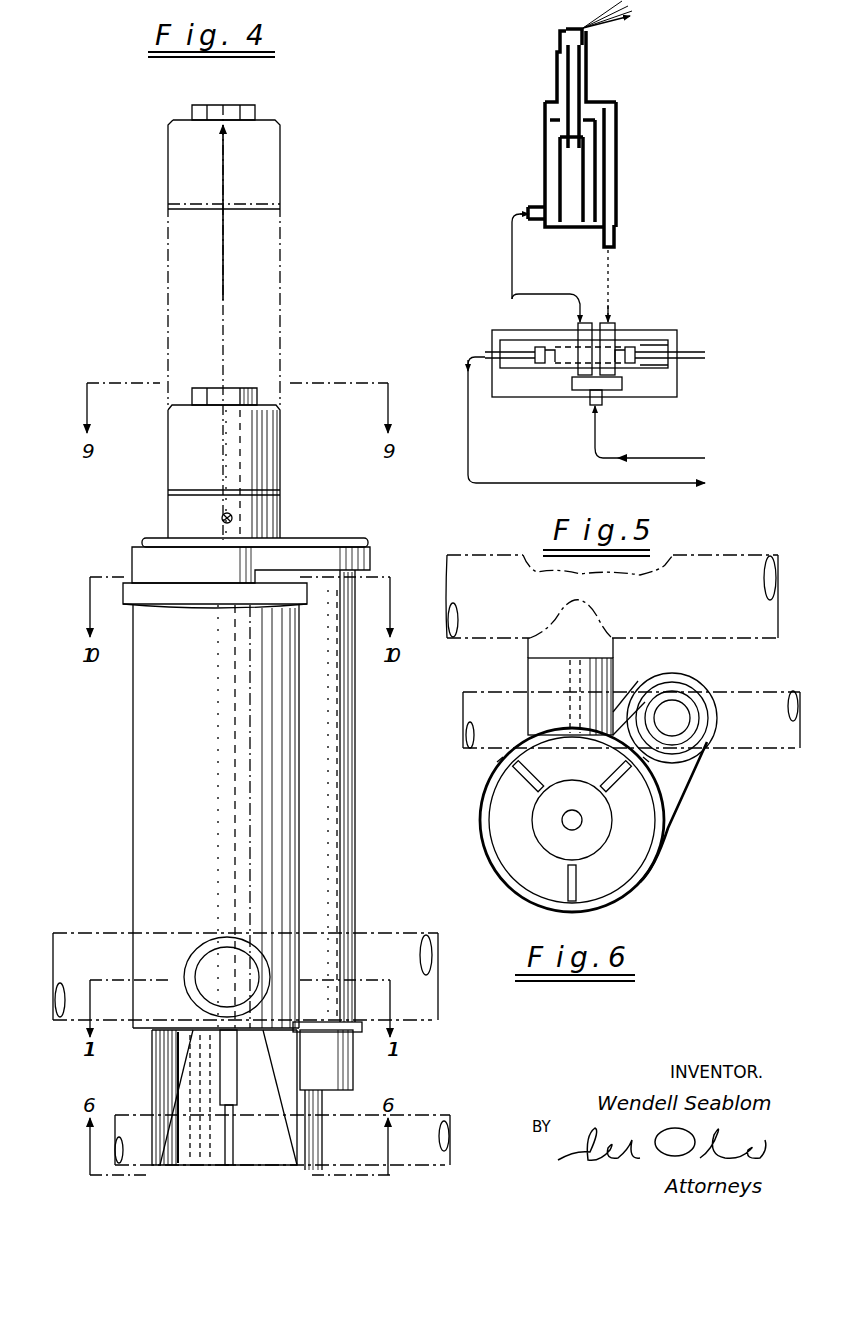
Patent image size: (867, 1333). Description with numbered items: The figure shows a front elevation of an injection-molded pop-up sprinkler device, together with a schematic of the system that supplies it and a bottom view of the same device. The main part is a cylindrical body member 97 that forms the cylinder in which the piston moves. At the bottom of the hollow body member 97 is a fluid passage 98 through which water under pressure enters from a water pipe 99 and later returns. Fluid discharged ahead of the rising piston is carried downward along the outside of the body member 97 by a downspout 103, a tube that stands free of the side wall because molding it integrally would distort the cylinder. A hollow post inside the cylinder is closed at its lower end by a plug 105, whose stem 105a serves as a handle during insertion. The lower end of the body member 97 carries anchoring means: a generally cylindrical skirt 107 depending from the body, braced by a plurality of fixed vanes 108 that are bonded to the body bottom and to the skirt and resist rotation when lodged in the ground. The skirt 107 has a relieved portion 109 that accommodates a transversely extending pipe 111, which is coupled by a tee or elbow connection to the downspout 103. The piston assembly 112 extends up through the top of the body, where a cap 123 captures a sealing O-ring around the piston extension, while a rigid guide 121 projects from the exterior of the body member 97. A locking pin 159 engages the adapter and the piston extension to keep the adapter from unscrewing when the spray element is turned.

In FIG. 4, the cylindrical body member 97 is at (157, 858).
In FIG. 4, the fluid passage 98 is at (192, 955).
In FIG. 6, the fluid passage 98 is at (551, 686).
In FIG. 4, the water pipe 99 is at (413, 933).
In FIG. 6, the water pipe 99 is at (712, 640).
In FIG. 4, the downspout 103 is at (340, 745).
In FIG. 6, the downspout 103 is at (682, 730).
In FIG. 6, the plug 105 is at (592, 842).
In FIG. 4, the stem 105a is at (232, 1086).
In FIG. 6, the stem 105a is at (565, 825).
In FIG. 4, the skirt 107 is at (322, 1150).
In FIG. 6, the skirt 107 is at (632, 880).
In FIG. 4, the fixed vanes 108 is at (166, 1124).
In FIG. 6, the fixed vanes 108 is at (515, 790).
In FIG. 4, the relieved portion 109 is at (305, 1170).
In FIG. 6, the relieved portion 109 is at (643, 757).
In FIG. 4, the transversely extending pipe 111 is at (421, 1115).
In FIG. 6, the transversely extending pipe 111 is at (750, 748).
In FIG. 4, the piston assembly 112 is at (285, 299).
In FIG. 4, the rigid guide 121 is at (352, 1024).
In FIG. 6, the rigid guide 121 is at (676, 788).
In FIG. 4, the cap 123 is at (350, 538).
In FIG. 6, the cap 123 is at (630, 690).
In FIG. 4, the locking pin 159 is at (221, 518).